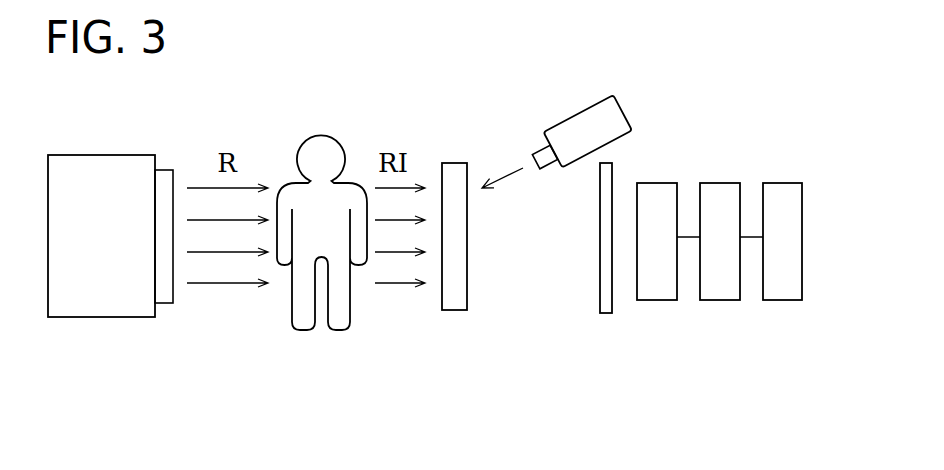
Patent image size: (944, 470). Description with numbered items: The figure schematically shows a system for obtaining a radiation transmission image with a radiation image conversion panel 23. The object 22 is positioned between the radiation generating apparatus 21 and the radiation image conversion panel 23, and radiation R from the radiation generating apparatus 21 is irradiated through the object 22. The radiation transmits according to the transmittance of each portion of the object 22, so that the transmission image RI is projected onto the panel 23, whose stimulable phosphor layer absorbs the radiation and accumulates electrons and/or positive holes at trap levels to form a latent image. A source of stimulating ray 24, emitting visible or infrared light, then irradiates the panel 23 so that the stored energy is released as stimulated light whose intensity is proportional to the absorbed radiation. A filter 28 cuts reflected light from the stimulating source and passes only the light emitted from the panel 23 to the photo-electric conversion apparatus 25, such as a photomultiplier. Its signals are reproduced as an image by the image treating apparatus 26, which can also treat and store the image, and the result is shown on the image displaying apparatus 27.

The radiation generating apparatus 21 is at (105, 317).
The object 22 is at (303, 330).
The radiation image conversion panel 23 is at (453, 310).
The source of stimulating ray 24 is at (618, 104).
The photo-electric conversion apparatus 25 is at (657, 300).
The image treating apparatus 26 is at (718, 300).
The image displaying apparatus 27 is at (782, 300).
The filter 28 is at (603, 313).